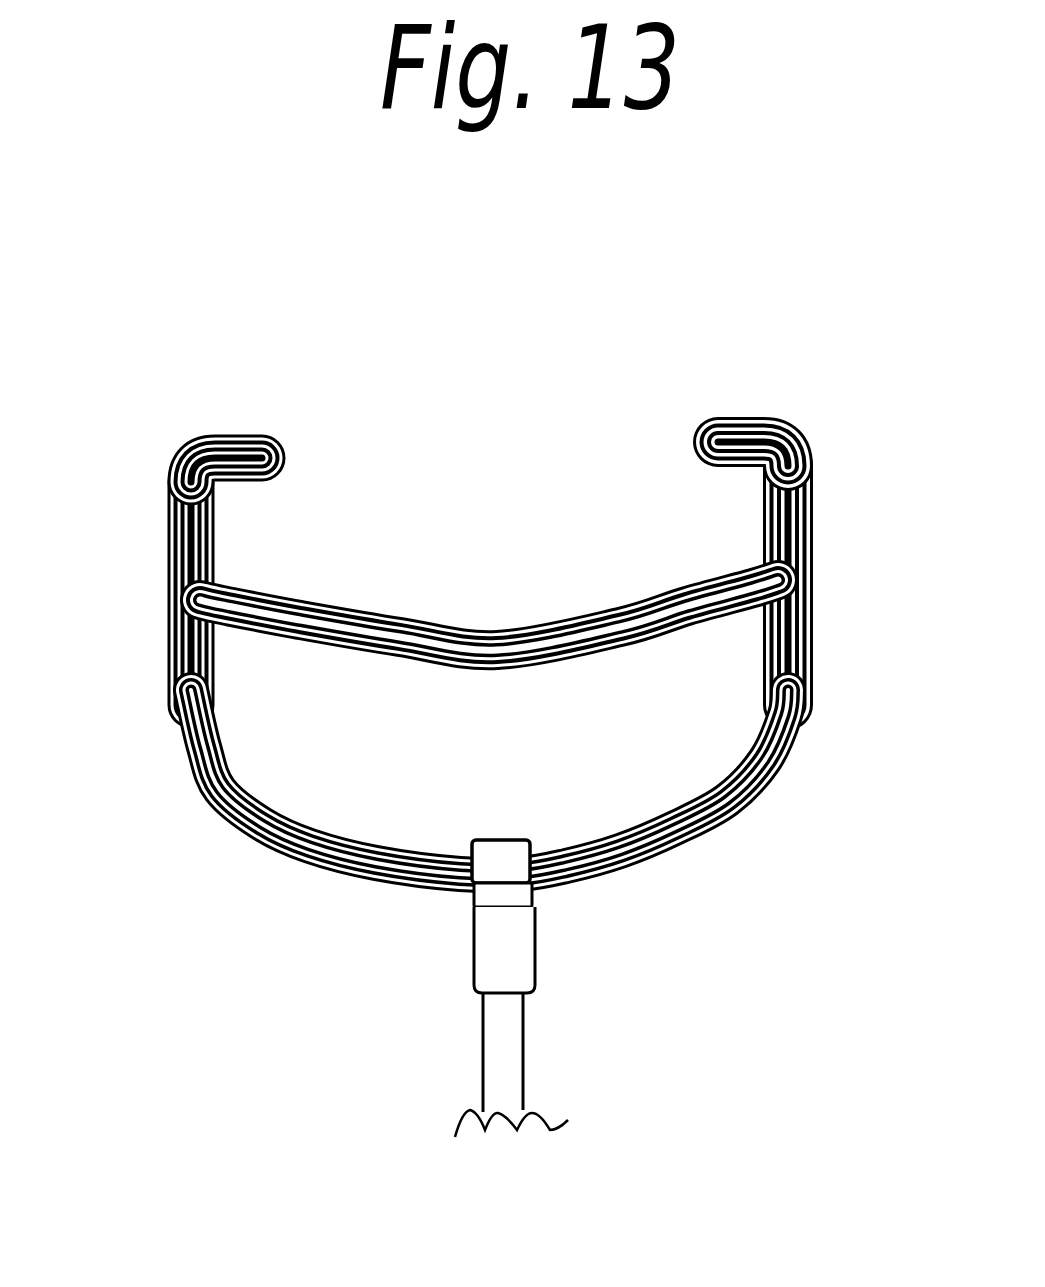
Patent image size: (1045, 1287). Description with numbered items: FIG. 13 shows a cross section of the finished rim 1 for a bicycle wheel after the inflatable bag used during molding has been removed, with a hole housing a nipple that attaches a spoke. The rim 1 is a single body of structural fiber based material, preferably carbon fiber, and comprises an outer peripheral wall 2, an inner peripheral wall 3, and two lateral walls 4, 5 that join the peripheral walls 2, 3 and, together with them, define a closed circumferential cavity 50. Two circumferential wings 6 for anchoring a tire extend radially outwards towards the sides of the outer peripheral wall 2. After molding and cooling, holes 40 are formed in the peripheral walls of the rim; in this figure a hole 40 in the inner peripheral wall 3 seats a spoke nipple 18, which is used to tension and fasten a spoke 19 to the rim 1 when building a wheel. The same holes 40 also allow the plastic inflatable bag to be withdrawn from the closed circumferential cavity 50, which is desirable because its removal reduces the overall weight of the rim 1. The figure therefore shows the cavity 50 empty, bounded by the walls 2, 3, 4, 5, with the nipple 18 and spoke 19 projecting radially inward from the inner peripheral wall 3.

The rim 1 is at (484, 642).
The outer peripheral wall 2 is at (377, 637).
The inner peripheral wall 3 is at (312, 862).
The lateral wall 4 is at (197, 673).
The lateral wall 5 is at (813, 683).
The circumferential wing 6 is at (197, 528).
The spoke nipple 18 is at (483, 957).
The spoke 19 is at (510, 1080).
The hole 40 is at (533, 897).
The closed circumferential cavity 50 is at (603, 743).